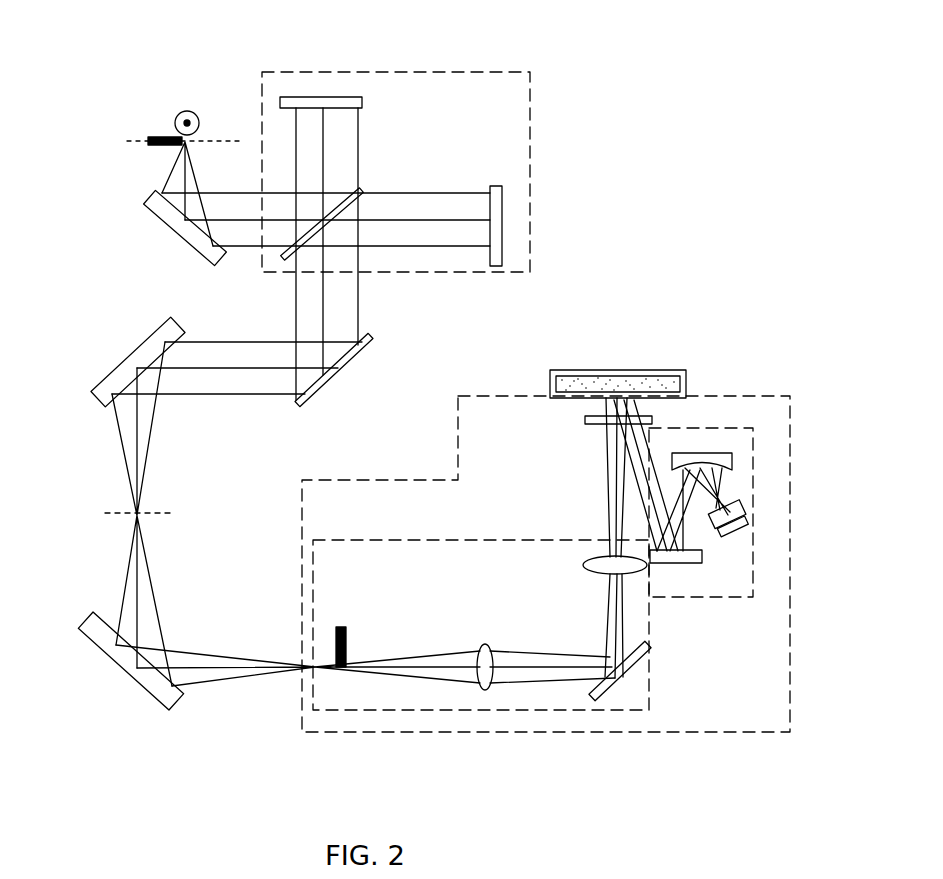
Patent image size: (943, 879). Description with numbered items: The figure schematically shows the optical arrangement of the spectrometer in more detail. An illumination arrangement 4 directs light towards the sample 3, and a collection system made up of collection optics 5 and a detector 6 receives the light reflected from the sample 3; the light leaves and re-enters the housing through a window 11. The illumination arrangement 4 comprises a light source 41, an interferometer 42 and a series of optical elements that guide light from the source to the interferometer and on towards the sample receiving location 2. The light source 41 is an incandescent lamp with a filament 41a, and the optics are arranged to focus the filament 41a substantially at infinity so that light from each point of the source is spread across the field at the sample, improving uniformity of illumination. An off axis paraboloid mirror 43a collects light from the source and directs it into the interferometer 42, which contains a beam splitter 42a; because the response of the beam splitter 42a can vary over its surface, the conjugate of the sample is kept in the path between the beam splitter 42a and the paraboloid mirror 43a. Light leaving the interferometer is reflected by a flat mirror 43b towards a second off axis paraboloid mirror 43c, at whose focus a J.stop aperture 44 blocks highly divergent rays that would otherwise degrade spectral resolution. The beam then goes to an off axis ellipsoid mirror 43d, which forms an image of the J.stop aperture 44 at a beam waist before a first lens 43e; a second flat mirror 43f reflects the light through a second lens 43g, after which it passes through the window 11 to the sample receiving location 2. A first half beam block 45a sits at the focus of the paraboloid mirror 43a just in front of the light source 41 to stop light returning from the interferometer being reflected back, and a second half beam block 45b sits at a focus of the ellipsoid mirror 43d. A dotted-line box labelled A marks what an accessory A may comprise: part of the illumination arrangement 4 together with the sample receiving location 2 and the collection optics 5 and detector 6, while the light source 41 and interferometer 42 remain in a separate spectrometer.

The sample receiving location 2 is at (545, 396).
The sample 3 is at (605, 370).
The illumination arrangement 4 is at (128, 730).
The collection optics 5 is at (750, 448).
The detector 6 is at (742, 512).
The window 11 is at (652, 420).
The light source 41 is at (181, 118).
The filament 41a is at (190, 120).
The interferometer 42 is at (507, 105).
The beam splitter 42a is at (362, 190).
The off axis paraboloid mirror 43a is at (173, 221).
The flat mirror 43b is at (372, 337).
The second off axis paraboloid mirror 43c is at (108, 382).
The off axis ellipsoid mirror 43d is at (92, 640).
The first lens 43e is at (483, 690).
The second flat mirror 43f is at (614, 700).
The second lens 43g is at (648, 566).
The J.stop aperture 44 is at (108, 512).
The first half beam block 45a is at (150, 140).
The second half beam block 45b is at (312, 672).
The accessory A is at (709, 737).